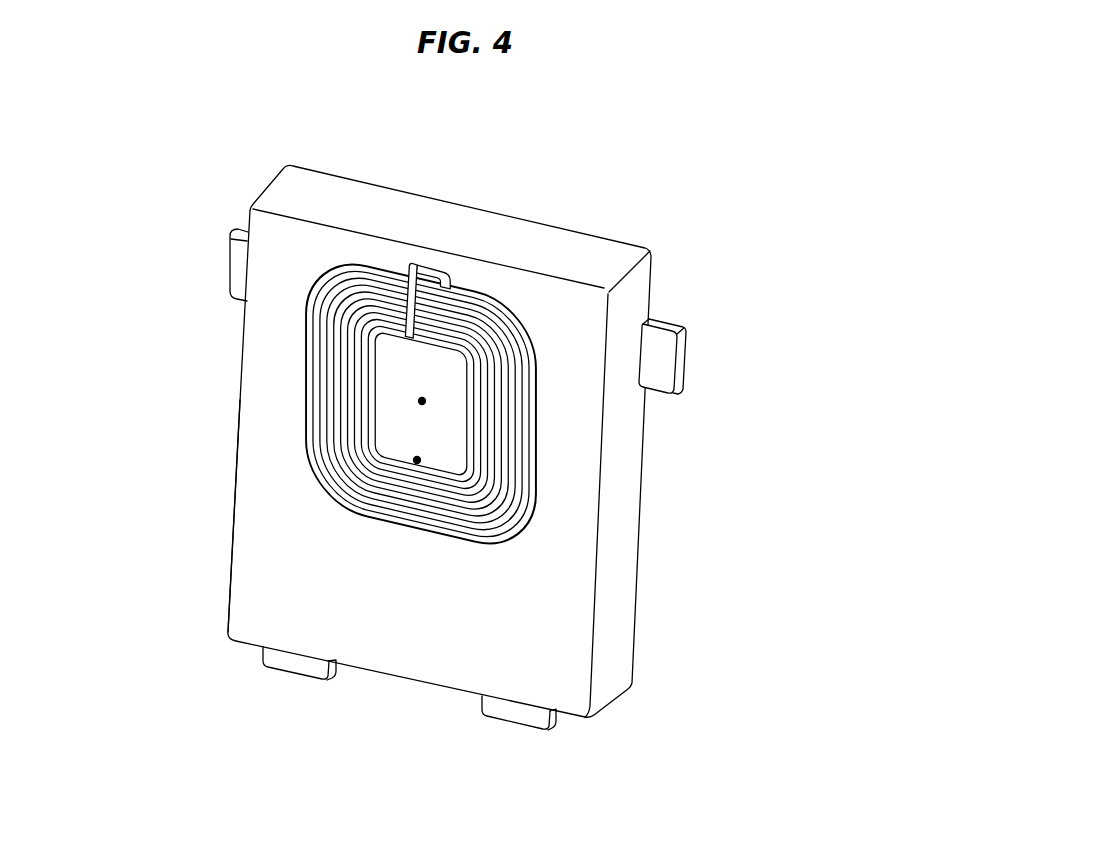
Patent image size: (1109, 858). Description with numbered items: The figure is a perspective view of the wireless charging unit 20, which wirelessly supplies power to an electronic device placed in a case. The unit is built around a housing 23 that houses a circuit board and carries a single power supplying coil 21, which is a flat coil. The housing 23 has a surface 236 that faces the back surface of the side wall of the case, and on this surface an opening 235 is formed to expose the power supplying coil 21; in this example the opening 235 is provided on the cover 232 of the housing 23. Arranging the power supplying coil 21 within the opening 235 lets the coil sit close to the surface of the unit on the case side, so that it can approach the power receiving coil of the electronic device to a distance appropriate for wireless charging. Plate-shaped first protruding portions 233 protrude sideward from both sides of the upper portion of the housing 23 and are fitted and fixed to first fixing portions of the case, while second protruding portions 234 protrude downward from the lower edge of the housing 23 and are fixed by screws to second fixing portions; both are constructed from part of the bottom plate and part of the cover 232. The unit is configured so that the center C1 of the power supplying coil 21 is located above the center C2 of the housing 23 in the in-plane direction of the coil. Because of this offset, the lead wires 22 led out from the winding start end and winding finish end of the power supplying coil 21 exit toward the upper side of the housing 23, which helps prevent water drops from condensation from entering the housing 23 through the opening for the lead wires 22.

The wireless charging unit 20 is at (489, 422).
The power supplying coil 21 is at (510, 483).
The lead wires 22 is at (413, 263).
The housing 23 is at (463, 458).
The cover 232 is at (430, 463).
The first protruding portions 233 is at (685, 358).
The second protruding portions 234 is at (294, 688).
The opening 235 is at (303, 335).
The surface 236 is at (240, 522).
The center of the power supplying coil C1 is at (425, 398).
The center of the housing C2 is at (420, 457).